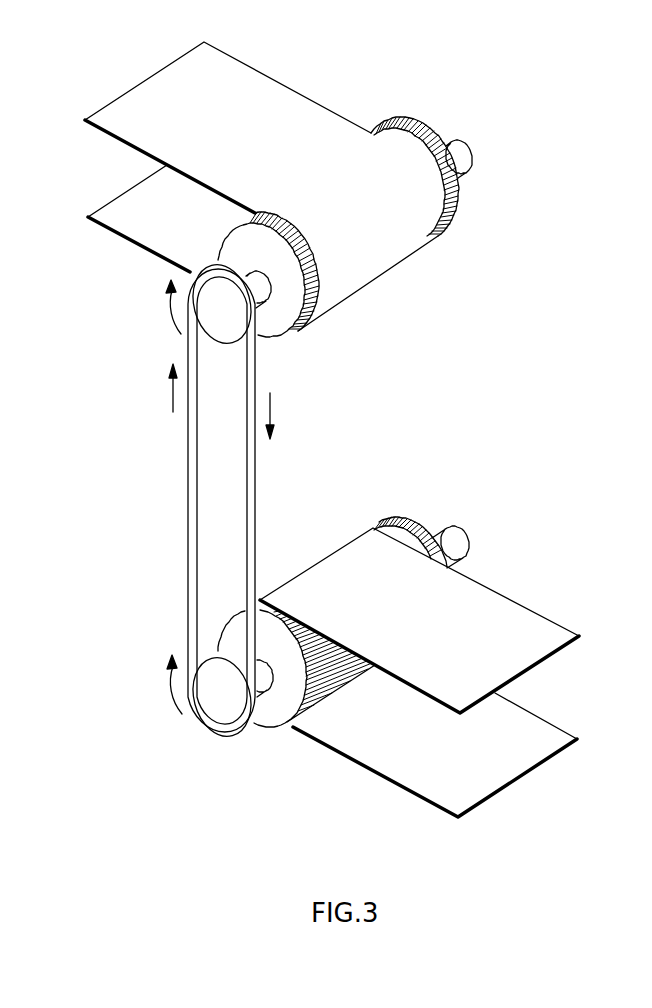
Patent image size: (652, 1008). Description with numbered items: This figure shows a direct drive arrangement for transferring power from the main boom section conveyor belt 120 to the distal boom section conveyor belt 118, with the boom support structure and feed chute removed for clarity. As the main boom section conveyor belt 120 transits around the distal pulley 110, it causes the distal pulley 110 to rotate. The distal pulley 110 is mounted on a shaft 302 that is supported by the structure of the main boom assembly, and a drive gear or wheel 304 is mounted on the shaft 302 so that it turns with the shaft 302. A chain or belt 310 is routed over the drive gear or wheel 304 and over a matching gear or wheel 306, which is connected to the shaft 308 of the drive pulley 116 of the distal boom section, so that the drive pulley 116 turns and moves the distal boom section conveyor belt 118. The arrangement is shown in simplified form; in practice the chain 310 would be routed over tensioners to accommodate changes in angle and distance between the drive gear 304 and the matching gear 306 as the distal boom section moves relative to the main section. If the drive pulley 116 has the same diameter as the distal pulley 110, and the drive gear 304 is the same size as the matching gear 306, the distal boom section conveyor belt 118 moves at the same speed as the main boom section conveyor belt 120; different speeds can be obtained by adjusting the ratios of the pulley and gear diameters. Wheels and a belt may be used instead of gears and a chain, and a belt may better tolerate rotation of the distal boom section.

The distal pulley 110 is at (305, 327).
The drive pulley of the distal boom section 116 is at (287, 707).
The distal boom section conveyor belt 118 is at (493, 632).
The main boom section conveyor belt 120 is at (297, 127).
The shaft 302 is at (447, 138).
The drive gear or wheel 304 is at (218, 293).
The matching gear or wheel 306 is at (225, 700).
The shaft of the drive pulley 308 is at (455, 540).
The chain or belt 310 is at (187, 527).